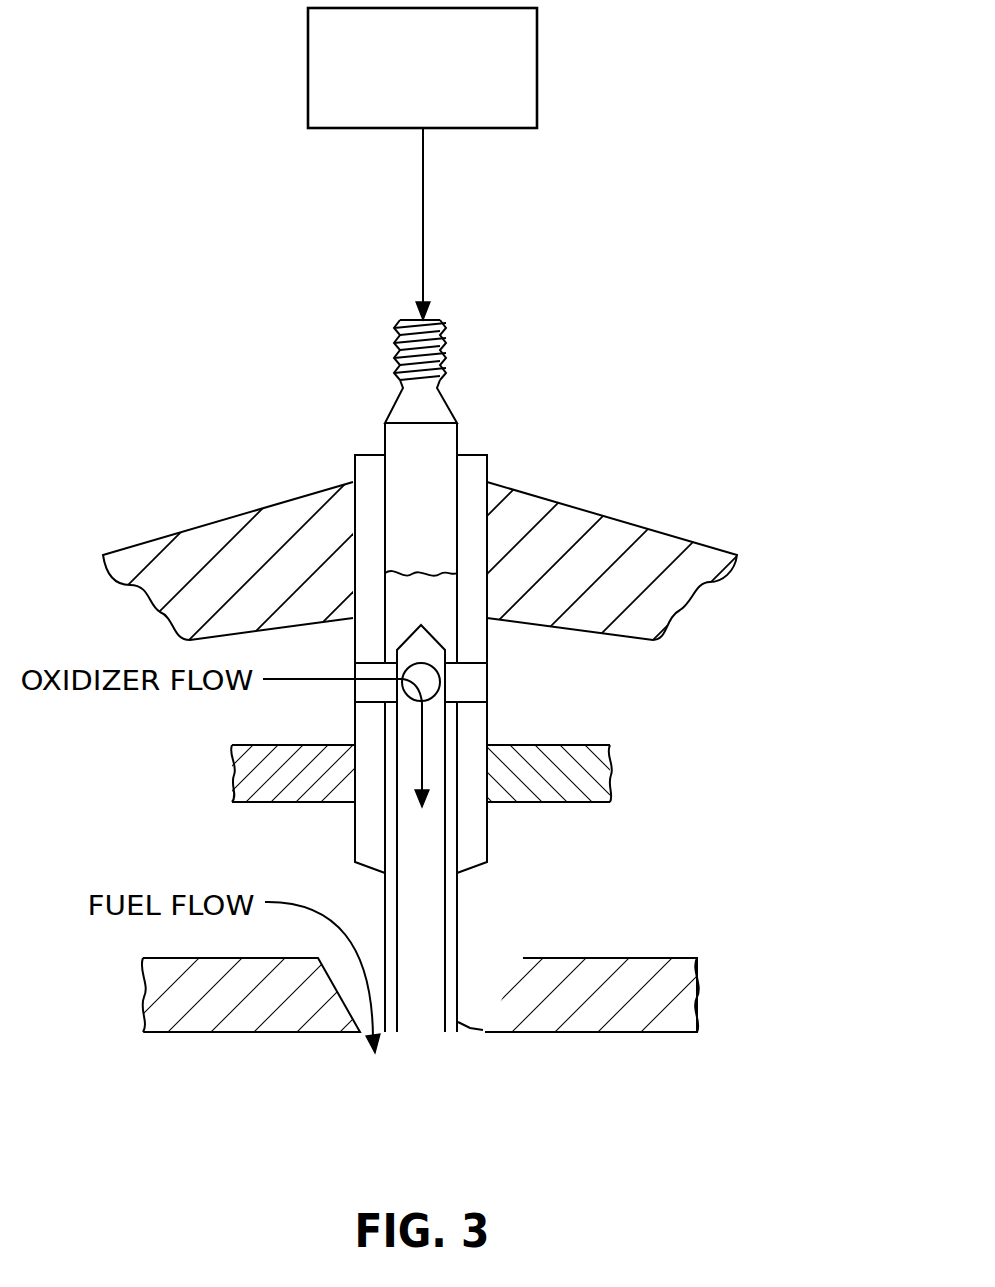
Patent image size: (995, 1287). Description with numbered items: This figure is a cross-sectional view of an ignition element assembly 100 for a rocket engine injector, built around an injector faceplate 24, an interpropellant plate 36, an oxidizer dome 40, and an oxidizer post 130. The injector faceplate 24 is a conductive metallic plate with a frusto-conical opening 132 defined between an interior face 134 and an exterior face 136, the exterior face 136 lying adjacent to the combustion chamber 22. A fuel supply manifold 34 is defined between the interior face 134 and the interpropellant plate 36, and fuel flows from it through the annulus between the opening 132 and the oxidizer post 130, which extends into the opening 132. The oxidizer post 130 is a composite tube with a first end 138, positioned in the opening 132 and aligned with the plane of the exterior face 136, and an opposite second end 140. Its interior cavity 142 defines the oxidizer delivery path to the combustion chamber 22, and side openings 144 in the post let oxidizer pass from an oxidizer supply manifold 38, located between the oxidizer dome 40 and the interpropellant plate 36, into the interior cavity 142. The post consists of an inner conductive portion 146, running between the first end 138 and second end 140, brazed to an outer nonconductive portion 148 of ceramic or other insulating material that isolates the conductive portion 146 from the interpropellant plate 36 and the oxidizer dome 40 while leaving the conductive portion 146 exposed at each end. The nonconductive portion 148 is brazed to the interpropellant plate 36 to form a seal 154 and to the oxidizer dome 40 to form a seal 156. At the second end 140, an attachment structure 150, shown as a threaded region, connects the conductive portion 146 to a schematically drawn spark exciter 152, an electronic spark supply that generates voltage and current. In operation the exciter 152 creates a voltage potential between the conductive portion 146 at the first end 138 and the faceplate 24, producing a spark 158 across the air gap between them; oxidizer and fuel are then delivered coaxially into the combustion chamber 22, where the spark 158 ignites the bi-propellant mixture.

The combustion chamber 22 is at (320, 1080).
The injector faceplate 24 is at (442, 1009).
The fuel supply manifold 34 is at (607, 855).
The interpropellant plate 36 is at (585, 762).
The oxidizer supply manifold 38 is at (607, 710).
The oxidizer dome 40 is at (670, 520).
The ignition element assembly 100 is at (160, 208).
The oxidizer post 130 is at (437, 700).
The frusto-conical opening 132 is at (483, 965).
The interior face 134 is at (650, 958).
The exterior face 136 is at (621, 1033).
The first end 138 is at (452, 1033).
The second end 140 is at (421, 332).
The interior cavity 142 is at (410, 730).
The side openings 144 is at (378, 662).
The conductive portion 146 is at (384, 897).
The nonconductive portion 148 is at (368, 828).
The attachment structure 150 is at (396, 324).
The spark exciter 152 is at (537, 68).
The seal 154 is at (490, 812).
The seal 156 is at (488, 470).
The spark 158 is at (474, 1028).